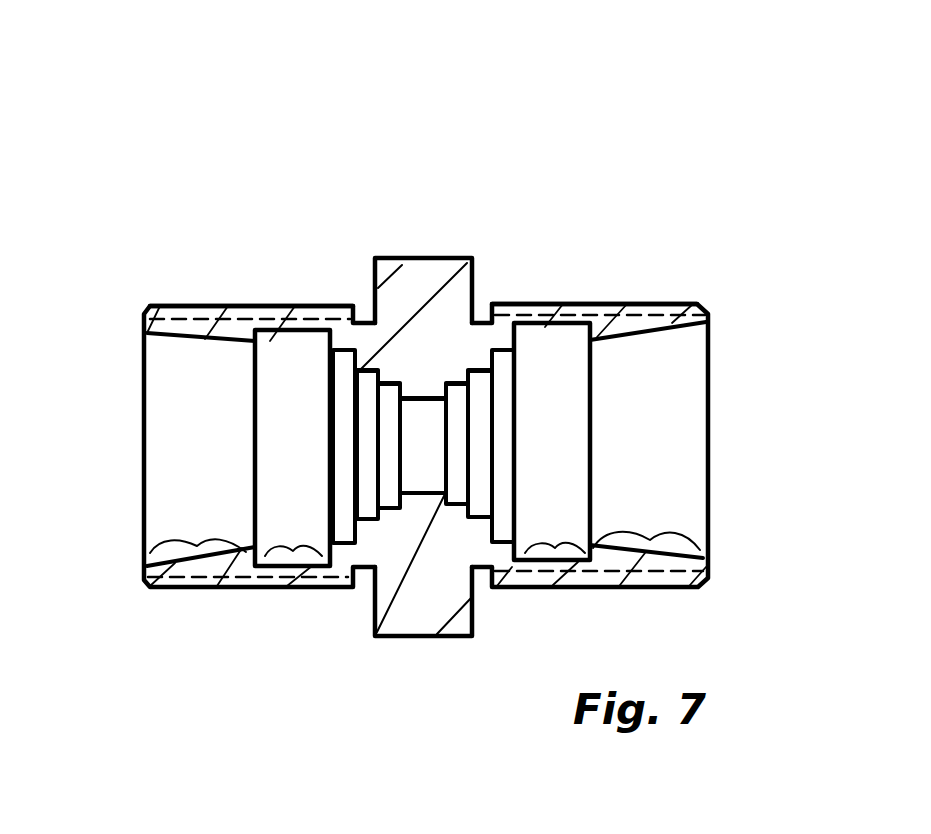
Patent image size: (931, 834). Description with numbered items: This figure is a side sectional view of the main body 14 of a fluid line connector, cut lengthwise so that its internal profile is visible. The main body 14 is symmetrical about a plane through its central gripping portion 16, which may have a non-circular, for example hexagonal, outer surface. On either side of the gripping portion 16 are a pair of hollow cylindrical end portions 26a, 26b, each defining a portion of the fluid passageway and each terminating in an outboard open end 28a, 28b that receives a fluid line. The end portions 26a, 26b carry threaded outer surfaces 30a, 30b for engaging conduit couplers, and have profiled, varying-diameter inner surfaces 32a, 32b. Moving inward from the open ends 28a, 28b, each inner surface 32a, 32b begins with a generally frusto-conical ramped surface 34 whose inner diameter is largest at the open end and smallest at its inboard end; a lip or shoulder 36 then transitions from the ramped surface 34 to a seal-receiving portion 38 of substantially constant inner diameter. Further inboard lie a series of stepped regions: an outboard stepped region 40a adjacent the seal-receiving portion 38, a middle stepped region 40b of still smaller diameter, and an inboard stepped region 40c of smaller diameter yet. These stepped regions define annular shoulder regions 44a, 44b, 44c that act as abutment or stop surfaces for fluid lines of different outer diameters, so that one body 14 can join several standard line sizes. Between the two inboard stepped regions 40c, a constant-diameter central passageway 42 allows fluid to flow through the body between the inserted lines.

The main body 14 is at (532, 100).
The central gripping portion 16 is at (436, 255).
The hollow cylindrical end portion 26a is at (277, 304).
The hollow cylindrical end portion 26b is at (583, 303).
The outboard open end 28a is at (157, 484).
The outboard open end 28b is at (688, 452).
The threaded outer surface 30a is at (228, 304).
The threaded outer surface 30b is at (620, 302).
The profiled inner surface 32a is at (322, 367).
The profiled inner surface 32b is at (508, 368).
The ramped surface 34 is at (425, 525).
The lip or shoulder 36 is at (262, 466).
The seal-receiving portion 38 is at (425, 531).
The outboard stepped region 40a is at (342, 546).
The middle stepped region 40b is at (366, 521).
The inboard stepped region 40c is at (455, 507).
The central passageway 42 is at (428, 490).
The annular shoulder region 44a is at (358, 355).
The annular shoulder region 44b is at (377, 379).
The annular shoulder region 44c is at (447, 383).